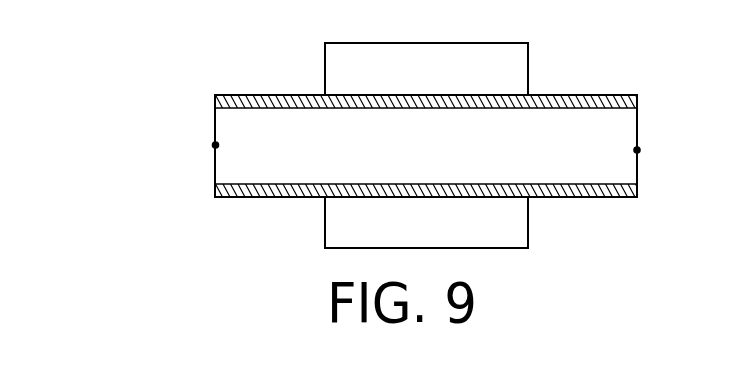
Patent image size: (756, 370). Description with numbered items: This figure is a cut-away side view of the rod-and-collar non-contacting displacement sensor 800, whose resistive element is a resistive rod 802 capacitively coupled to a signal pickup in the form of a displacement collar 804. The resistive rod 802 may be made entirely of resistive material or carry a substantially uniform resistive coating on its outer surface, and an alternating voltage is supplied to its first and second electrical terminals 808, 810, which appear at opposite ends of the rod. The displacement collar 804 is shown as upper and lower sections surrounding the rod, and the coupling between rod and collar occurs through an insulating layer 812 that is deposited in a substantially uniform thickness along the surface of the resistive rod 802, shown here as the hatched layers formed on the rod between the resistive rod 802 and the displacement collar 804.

The rod-and-collar non-contacting displacement sensor 800 is at (258, 49).
The resistive rod 802 is at (444, 157).
The displacement collar 804 is at (444, 77).
The first electrical terminal 808 is at (214, 146).
The second electrical terminal 810 is at (639, 149).
The insulating layer 812 is at (620, 93).